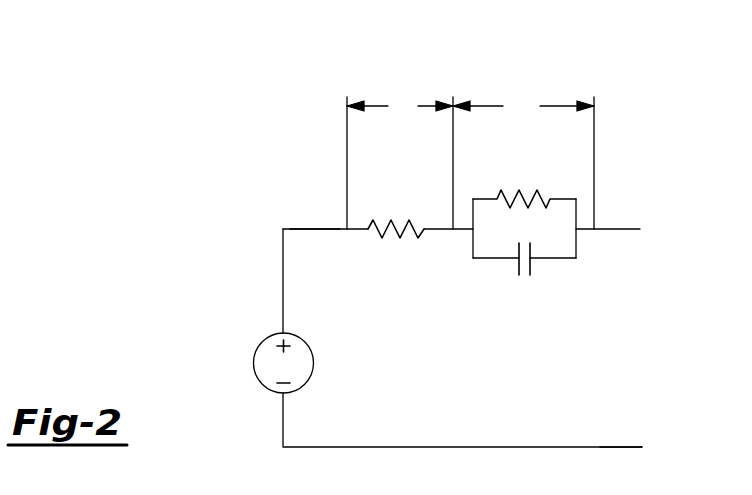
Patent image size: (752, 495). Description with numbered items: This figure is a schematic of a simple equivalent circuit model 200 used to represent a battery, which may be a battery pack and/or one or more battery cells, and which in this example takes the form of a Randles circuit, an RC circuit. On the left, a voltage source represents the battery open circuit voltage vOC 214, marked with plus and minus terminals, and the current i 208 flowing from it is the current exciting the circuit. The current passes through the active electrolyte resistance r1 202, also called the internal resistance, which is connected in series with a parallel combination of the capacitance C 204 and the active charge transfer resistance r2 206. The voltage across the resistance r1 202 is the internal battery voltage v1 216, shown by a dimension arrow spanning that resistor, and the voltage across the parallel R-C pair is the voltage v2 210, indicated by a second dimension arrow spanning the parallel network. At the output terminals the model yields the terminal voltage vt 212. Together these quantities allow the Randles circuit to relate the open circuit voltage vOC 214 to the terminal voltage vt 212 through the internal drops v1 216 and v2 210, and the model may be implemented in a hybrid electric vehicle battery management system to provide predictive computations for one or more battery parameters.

The simple equivalent circuit model 200 is at (186, 145).
The active electrolyte resistance r1 202 is at (405, 205).
The parallel capacitance C 204 is at (530, 278).
The active charge transfer resistance r2 206 is at (541, 191).
The current i 208 is at (320, 185).
The voltage v2 210 is at (527, 90).
The terminal voltage vt 212 is at (603, 418).
The battery open circuit voltage vOC 214 is at (253, 363).
The internal battery voltage v1 216 is at (410, 90).